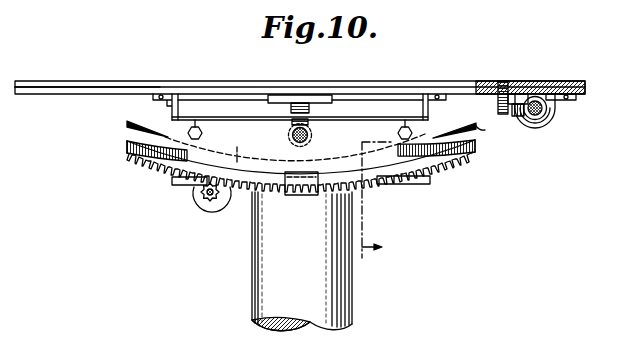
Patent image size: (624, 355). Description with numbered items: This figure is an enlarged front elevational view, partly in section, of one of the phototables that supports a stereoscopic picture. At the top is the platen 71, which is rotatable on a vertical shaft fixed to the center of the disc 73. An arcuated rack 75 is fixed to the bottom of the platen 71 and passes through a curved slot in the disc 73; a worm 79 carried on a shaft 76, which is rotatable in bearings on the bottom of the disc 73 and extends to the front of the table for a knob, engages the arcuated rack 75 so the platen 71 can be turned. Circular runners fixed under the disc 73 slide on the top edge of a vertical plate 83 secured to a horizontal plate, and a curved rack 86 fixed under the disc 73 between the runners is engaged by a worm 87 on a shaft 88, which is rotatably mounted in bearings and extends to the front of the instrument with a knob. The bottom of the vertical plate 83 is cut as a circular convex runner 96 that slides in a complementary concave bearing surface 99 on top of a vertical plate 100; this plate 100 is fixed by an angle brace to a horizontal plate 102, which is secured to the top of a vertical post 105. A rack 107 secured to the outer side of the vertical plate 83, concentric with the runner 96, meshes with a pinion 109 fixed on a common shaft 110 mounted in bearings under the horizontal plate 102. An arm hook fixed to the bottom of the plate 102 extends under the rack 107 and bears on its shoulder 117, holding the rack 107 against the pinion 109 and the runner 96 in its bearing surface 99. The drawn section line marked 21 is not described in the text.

The platen 71 is at (62, 81).
The disc 73 is at (62, 94).
The arcuated rack 75 is at (526, 125).
The shaft 76 is at (558, 121).
The worm 79 is at (544, 127).
The vertical plate 83 is at (453, 132).
The rack 86 is at (310, 109).
The worm 87 is at (291, 135).
The shaft 88 is at (311, 135).
The circular convex runner 96 is at (489, 132).
The concave bearing surface 99 is at (360, 190).
The vertical plate 100 is at (206, 128).
The horizontal plate 102 is at (418, 185).
The vertical post 105 is at (302, 261).
The rack 107 is at (453, 170).
The pinion 109 is at (196, 197).
The common shaft 110 is at (216, 201).
The shoulder 117 is at (163, 152).
The section line 21- 21 is at (324, 186).